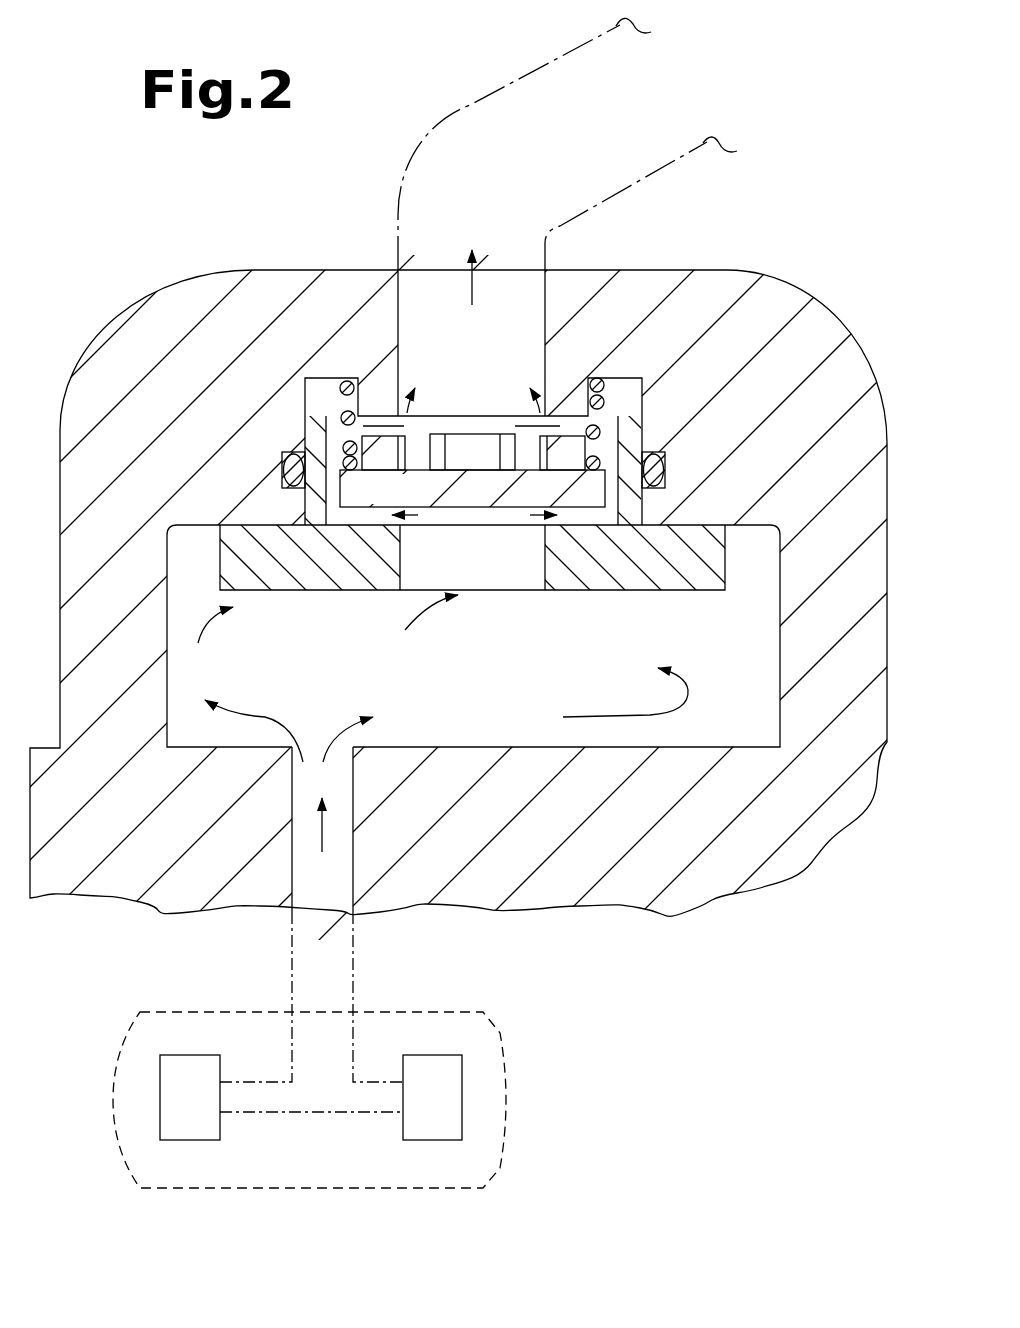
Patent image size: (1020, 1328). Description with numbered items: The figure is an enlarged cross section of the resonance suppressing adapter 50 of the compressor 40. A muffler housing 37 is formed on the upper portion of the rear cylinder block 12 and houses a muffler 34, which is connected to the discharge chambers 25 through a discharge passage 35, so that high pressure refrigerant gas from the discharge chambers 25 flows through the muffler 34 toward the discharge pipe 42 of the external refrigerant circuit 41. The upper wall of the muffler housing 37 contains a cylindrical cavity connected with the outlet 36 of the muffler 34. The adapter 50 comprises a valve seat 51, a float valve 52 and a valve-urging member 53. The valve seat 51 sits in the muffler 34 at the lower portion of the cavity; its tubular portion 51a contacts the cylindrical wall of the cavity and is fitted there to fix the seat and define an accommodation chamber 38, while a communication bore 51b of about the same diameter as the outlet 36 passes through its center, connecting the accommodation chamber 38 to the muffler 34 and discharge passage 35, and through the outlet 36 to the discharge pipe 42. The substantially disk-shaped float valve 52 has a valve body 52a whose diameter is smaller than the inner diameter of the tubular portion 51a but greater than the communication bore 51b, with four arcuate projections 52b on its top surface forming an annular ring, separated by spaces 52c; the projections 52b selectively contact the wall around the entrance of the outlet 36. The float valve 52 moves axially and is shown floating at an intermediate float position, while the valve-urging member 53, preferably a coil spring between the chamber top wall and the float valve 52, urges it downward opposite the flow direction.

The rear cylinder block 12 is at (122, 313).
The muffler housing 37 is at (352, 277).
The outlet 36 is at (543, 298).
The discharge pipe 42 is at (663, 173).
The external refrigerant circuit 41 is at (626, 206).
The accommodation chamber 38 is at (317, 392).
The muffler 34 is at (482, 719).
The discharge passage 35 is at (340, 888).
The adapter 50 is at (302, 595).
The valve seat 51 is at (510, 664).
The tubular portion 51a is at (642, 423).
The communication bore 51b is at (540, 575).
The float valve 52 is at (510, 664).
The valve body 52a is at (462, 470).
The arcuate projections 52b is at (482, 440).
The space 52c is at (523, 462).
The valve-urging member 53 is at (600, 425).
The compressor 40 is at (500, 1030).
The discharge chambers 25 is at (210, 1117).